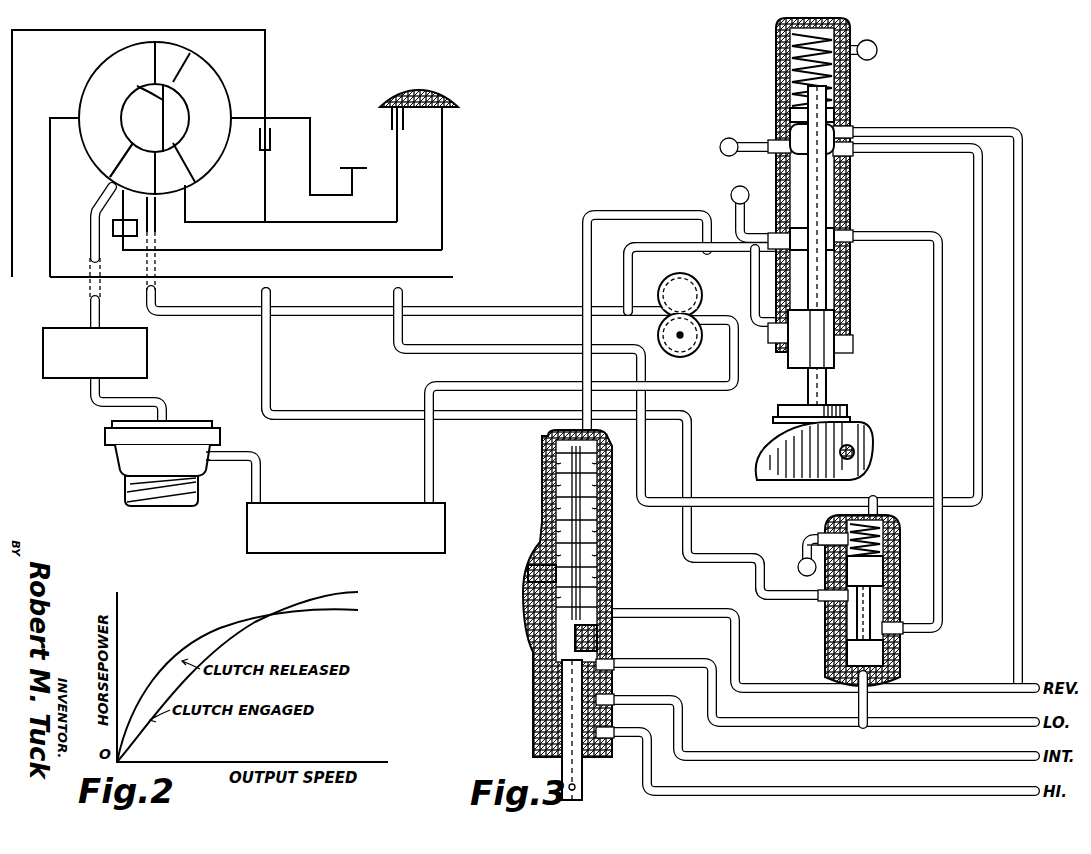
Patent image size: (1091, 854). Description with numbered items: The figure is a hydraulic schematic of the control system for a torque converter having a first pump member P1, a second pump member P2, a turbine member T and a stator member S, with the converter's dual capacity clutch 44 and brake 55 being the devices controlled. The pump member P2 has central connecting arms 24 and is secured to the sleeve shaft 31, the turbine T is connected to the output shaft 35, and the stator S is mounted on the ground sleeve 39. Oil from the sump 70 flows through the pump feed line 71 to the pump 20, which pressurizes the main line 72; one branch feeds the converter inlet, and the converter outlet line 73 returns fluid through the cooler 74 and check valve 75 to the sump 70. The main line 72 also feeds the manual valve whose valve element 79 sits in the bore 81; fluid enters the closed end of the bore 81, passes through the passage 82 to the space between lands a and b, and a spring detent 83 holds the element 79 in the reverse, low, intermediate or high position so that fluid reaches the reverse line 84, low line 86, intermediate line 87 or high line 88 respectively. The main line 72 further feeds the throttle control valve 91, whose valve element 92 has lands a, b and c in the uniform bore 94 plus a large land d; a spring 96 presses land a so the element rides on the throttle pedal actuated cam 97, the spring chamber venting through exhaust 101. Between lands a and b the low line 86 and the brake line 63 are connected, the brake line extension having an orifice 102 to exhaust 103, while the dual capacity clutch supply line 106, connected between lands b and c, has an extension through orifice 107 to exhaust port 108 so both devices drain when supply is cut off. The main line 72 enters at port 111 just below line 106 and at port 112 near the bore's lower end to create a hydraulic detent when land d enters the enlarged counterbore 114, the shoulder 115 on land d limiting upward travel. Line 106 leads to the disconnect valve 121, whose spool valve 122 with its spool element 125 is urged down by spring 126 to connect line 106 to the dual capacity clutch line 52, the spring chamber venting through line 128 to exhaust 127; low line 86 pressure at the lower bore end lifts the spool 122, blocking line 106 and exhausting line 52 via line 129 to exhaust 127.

The pump 20 is at (690, 342).
The central connecting arms 24 is at (150, 98).
The sleeve shaft 31 is at (272, 221).
The output shaft 35 is at (204, 279).
The ground sleeve 39 is at (282, 250).
The dual capacity clutch 44 is at (284, 119).
The dual capacity clutch line 52 is at (756, 572).
The brake 55 is at (378, 121).
The brake line 63 is at (392, 352).
The sump 70 is at (350, 503).
The pump feed line 71 is at (426, 478).
The main line 72 is at (288, 313).
The converter outlet line 73 is at (262, 456).
The cooler 74 is at (147, 352).
The check valve 75 is at (90, 302).
The valve element 79 is at (562, 490).
The bore 81 is at (558, 507).
The passage 82 is at (566, 542).
The spring detent 83 is at (526, 575).
The reverse line 84 is at (636, 610).
The low line 86 is at (902, 130).
The intermediate line 87 is at (632, 700).
The high line 88 is at (630, 732).
The throttle control valve 91 is at (768, 103).
The valve element 92 is at (816, 258).
The uniform bore 94 is at (838, 82).
The spring 96 is at (790, 64).
The throttle pedal actuated cam 97 is at (856, 455).
The exhaust 101 is at (873, 44).
The orifice 102 is at (762, 142).
The exhaust 103 is at (719, 145).
The dual capacity clutch supply line 106 is at (886, 234).
The orifice 107 is at (752, 251).
The exhaust port 108 is at (730, 193).
The port 111 is at (750, 270).
The port 112 is at (778, 333).
The enlarged counterbore 114 is at (852, 345).
The shoulder 115 is at (786, 420).
The disconnect valve 121 is at (908, 549).
The spool valve 122 is at (872, 602).
The valve spool 125 is at (830, 626).
The spring 126 is at (874, 480).
The exhaust 127 is at (798, 562).
The line 128 is at (808, 536).
The line 129 is at (820, 590).
The pump P1 is at (213, 97).
The second pump member P2 is at (163, 55).
The stator member S is at (122, 166).
The turbine member T is at (92, 97).
The land a is at (838, 118).
The land b is at (826, 186).
The land c is at (796, 352).
The large land d is at (830, 406).